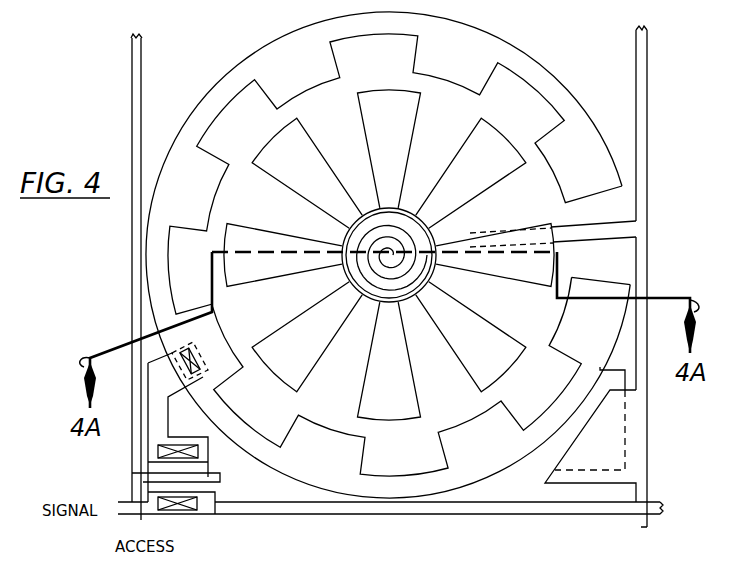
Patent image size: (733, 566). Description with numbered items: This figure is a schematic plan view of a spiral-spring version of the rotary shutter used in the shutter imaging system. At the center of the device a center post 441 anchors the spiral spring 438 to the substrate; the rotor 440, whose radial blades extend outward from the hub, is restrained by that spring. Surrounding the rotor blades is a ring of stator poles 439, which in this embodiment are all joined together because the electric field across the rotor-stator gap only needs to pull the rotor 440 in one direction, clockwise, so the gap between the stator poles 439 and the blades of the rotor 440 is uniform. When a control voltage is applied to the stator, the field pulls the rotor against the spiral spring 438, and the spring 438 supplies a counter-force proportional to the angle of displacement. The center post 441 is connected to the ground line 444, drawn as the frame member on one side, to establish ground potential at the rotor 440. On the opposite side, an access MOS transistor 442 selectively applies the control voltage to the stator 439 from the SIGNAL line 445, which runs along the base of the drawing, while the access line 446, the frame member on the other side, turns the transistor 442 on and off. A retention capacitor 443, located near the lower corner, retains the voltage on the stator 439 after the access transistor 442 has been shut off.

The spiral spring 438 is at (430, 306).
The stator poles 439 is at (307, 433).
The rotor 440 is at (352, 395).
The center post 441 is at (382, 246).
The access MOS transistor 442 is at (190, 473).
The retention capacitor 443 is at (605, 440).
The ground line 444 is at (648, 63).
The SIGNAL line 445 is at (330, 508).
The access line 446 is at (132, 69).